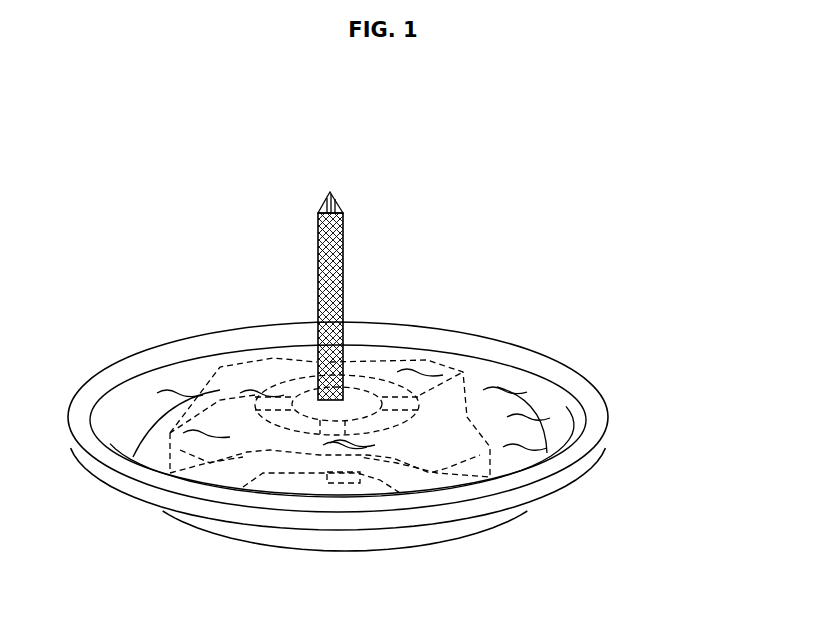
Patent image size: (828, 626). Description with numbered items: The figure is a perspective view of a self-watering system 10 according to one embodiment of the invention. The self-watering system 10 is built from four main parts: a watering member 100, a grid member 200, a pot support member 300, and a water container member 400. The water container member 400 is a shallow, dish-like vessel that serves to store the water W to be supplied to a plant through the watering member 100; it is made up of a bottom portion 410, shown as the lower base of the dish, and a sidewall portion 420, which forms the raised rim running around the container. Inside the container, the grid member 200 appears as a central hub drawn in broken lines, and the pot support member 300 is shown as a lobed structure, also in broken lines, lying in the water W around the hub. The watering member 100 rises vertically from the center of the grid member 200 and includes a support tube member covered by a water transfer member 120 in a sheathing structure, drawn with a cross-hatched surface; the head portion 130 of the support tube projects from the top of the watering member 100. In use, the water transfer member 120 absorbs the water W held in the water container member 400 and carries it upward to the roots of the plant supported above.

The self-watering system 10 is at (512, 235).
The watering member 100 is at (352, 190).
The water transfer member 120 is at (342, 253).
The head portion 130 is at (323, 203).
The grid member 200 is at (360, 393).
The pot support member 300 is at (445, 400).
The water container member 400 is at (163, 337).
The bottom portion 410 is at (440, 543).
The sidewall portion 420 is at (610, 447).
The water W is at (557, 427).